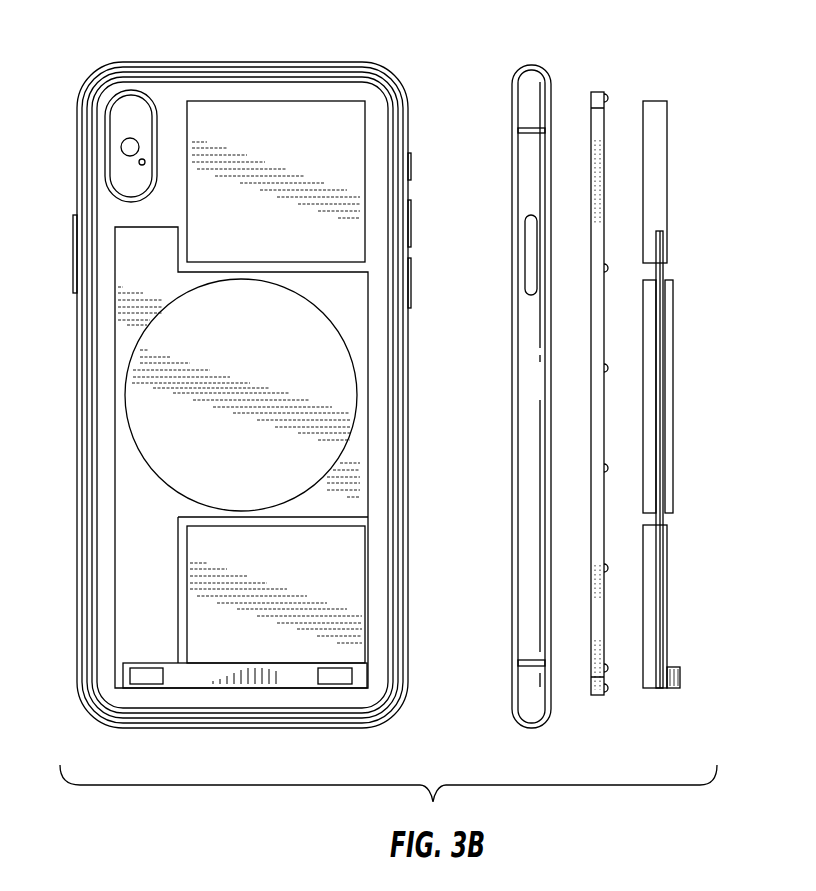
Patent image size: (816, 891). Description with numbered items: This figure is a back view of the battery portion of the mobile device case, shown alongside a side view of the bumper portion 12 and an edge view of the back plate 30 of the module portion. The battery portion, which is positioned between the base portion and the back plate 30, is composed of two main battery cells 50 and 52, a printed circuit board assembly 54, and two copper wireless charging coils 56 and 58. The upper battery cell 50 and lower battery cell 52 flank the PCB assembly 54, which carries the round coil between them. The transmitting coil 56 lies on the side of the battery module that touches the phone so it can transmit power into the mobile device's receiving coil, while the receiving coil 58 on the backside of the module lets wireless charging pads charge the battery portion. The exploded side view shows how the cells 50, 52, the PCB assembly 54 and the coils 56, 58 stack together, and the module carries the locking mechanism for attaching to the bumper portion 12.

The bumper portion 12 is at (532, 65).
The back plate 30 is at (597, 92).
The main battery cell 50 is at (313, 120).
The main battery cell 52 is at (327, 588).
The PCB assembly 54 is at (350, 298).
The transmitting coil 56 is at (648, 420).
The receiving coil 58 is at (175, 415).